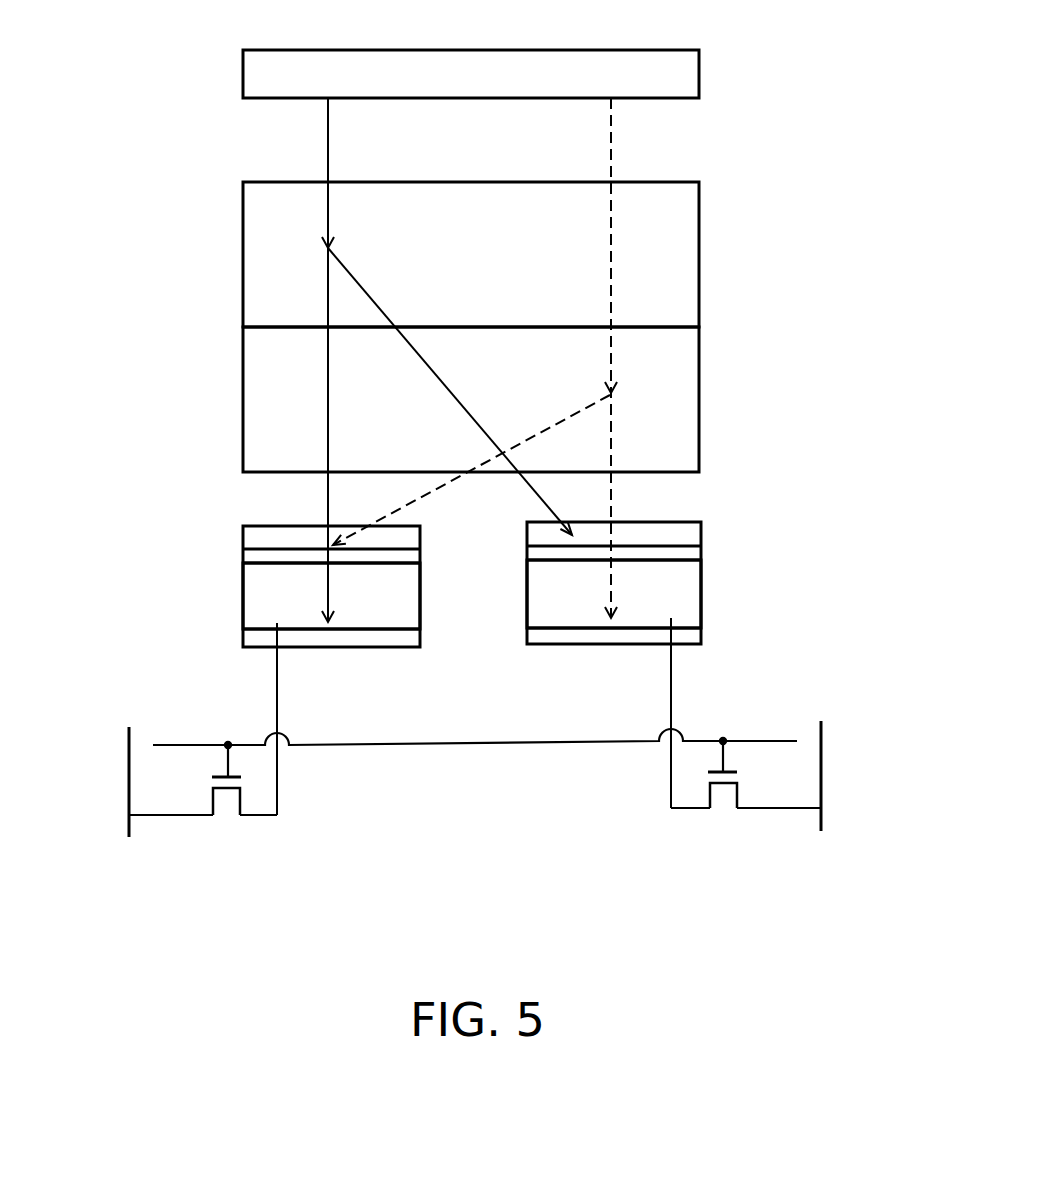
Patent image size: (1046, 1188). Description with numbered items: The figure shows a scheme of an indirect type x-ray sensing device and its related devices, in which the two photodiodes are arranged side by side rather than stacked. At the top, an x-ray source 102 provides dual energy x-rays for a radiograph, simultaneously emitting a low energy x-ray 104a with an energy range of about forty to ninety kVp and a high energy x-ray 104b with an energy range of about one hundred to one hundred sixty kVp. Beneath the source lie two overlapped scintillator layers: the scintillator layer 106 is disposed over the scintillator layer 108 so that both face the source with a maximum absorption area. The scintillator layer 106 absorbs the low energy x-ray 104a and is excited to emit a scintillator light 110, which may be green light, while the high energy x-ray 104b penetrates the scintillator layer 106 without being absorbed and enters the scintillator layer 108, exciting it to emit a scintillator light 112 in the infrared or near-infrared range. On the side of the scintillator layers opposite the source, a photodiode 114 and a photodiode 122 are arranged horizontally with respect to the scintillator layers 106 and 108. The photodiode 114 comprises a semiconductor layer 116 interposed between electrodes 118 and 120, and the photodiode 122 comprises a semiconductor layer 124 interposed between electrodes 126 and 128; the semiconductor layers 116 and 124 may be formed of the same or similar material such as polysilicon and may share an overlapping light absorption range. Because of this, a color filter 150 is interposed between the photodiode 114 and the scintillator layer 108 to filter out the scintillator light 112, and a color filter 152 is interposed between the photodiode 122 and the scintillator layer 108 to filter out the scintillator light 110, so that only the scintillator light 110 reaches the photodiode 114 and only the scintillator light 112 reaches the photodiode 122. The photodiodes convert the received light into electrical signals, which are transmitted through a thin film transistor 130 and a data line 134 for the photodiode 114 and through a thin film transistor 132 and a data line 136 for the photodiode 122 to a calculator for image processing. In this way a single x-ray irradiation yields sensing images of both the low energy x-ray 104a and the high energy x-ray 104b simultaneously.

The x-ray source 102 is at (699, 72).
The low energy x-ray 104a is at (326, 142).
The high energy x-ray 104b is at (613, 140).
The scintillator layer 106 is at (699, 250).
The scintillator layer 108 is at (699, 397).
The scintillator light 110 is at (326, 500).
The scintillator light 112 is at (613, 492).
The photodiode 114 is at (116, 543).
The semiconductor layer 116 is at (260, 597).
The electrode 118 is at (260, 557).
The electrode 120 is at (260, 638).
The photodiode 122 is at (829, 537).
The semiconductor layer 124 is at (687, 592).
The electrode 126 is at (687, 553).
The electrode 128 is at (687, 637).
The thin film transistor 130 is at (228, 807).
The thin film transistor 132 is at (722, 800).
The data line 134 is at (127, 745).
The data line 136 is at (823, 740).
The color filter 150 is at (256, 537).
The color filter 152 is at (697, 535).